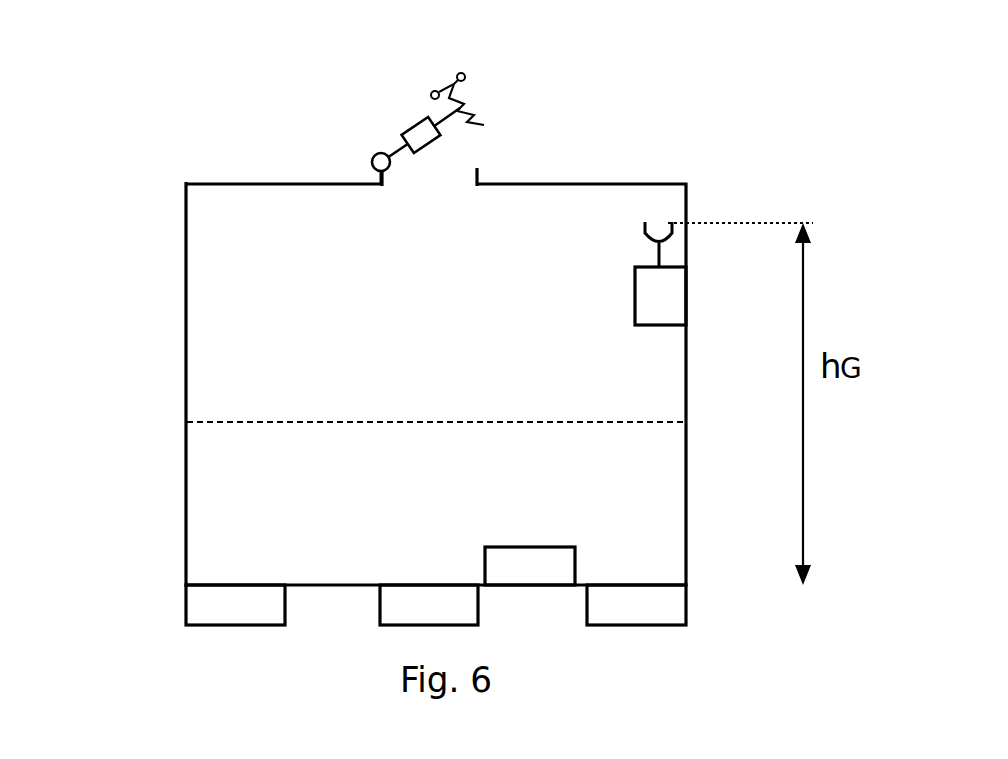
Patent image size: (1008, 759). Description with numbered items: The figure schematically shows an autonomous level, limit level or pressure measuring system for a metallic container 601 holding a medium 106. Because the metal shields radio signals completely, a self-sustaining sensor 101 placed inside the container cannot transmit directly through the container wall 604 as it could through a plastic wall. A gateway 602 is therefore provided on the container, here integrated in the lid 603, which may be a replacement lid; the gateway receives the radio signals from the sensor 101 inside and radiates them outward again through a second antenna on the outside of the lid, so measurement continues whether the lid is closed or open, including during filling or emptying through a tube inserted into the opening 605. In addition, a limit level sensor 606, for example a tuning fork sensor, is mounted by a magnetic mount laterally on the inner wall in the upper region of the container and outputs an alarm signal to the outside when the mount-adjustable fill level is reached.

The self-sustaining sensor 101 is at (575, 563).
The medium 106 is at (250, 422).
The metallic container 601 is at (687, 373).
The gateway 602 is at (407, 130).
The lid 603 is at (440, 117).
The container wall 604 is at (183, 273).
The opening 605 is at (455, 183).
The limit level sensor 606 is at (665, 292).